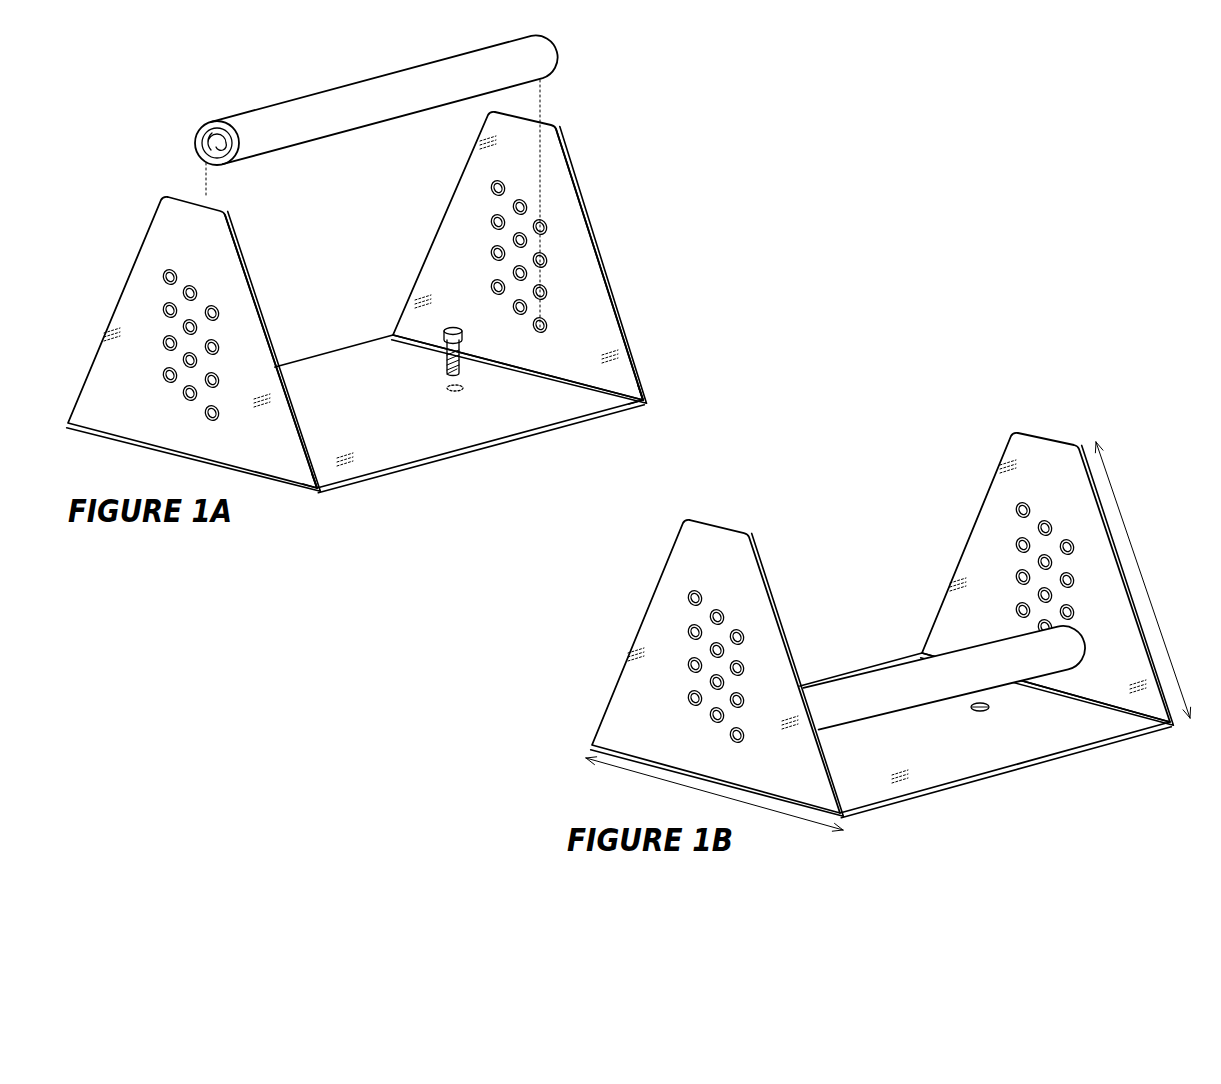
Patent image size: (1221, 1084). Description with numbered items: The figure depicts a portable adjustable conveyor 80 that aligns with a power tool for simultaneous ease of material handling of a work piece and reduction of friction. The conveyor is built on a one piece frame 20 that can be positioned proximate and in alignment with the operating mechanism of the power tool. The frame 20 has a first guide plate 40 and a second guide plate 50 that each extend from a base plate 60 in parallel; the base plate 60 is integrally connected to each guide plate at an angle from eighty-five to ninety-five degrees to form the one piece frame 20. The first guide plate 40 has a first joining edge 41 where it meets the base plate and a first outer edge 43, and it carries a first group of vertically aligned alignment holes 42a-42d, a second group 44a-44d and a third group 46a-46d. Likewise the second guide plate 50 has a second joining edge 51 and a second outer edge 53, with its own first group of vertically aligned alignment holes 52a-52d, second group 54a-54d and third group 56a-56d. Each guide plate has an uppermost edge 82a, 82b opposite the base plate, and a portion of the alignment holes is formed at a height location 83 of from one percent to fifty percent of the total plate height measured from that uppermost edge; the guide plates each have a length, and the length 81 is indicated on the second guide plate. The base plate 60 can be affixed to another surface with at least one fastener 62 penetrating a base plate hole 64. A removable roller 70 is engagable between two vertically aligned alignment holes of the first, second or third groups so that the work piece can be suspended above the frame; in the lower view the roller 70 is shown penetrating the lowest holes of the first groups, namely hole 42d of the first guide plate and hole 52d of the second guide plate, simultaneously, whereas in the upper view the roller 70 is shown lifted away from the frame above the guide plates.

In FIG. 1A, the one piece frame 20 is at (642, 229).
In FIG. 1A, the first guide plate 40 is at (416, 282).
In FIG. 1A, the first joining edge 41 is at (650, 406).
In FIG. 1A, the first outer edge 43 is at (574, 180).
In FIG. 1A, the vertically aligned alignment hole of first group 42a is at (545, 224).
In FIG. 1A, the vertically aligned alignment hole of second group 44a is at (521, 199).
In FIG. 1A, the vertically aligned alignment hole of third group 46a is at (491, 196).
In FIG. 1A, the vertically aligned alignment hole of first group 42d is at (534, 330).
In FIG. 1B, the vertically aligned alignment hole of first group 42d is at (727, 738).
In FIG. 1A, the vertically aligned alignment hole of second group 44d is at (513, 312).
In FIG. 1A, the vertically aligned alignment hole of third group 46d is at (491, 292).
In FIG. 1A, the second guide plate 50 is at (92, 366).
In FIG. 1A, the second joining edge 51 is at (316, 497).
In FIG. 1A, the second outer edge 53 is at (241, 262).
In FIG. 1A, the vertically aligned alignment hole of first group 52a is at (216, 308).
In FIG. 1A, the vertically aligned alignment hole of second group 54a is at (195, 287).
In FIG. 1A, the vertically aligned alignment hole of third group 56a is at (175, 270).
In FIG. 1A, the vertically aligned alignment hole of first group 52d is at (205, 417).
In FIG. 1A, the vertically aligned alignment hole of second group 54d is at (183, 397).
In FIG. 1A, the vertically aligned alignment hole of third group 56d is at (163, 379).
In FIG. 1A, the base plate 60 is at (314, 360).
In FIG. 1A, the fastener 62 is at (455, 327).
In FIG. 1A, the base plate hole 64 is at (447, 386).
In FIG. 1A, the removable roller 70 is at (400, 71).
In FIG. 1B, the removable roller 70 is at (978, 655).
In FIG. 1B, the portable adjustable conveyor 80 is at (596, 563).
In FIG. 1B, the length 81 is at (640, 778).
In FIG. 1B, the uppermost edge 82a is at (735, 518).
In FIG. 1B, the uppermost edge 82b is at (1056, 430).
In FIG. 1B, the height location 83 is at (1133, 550).